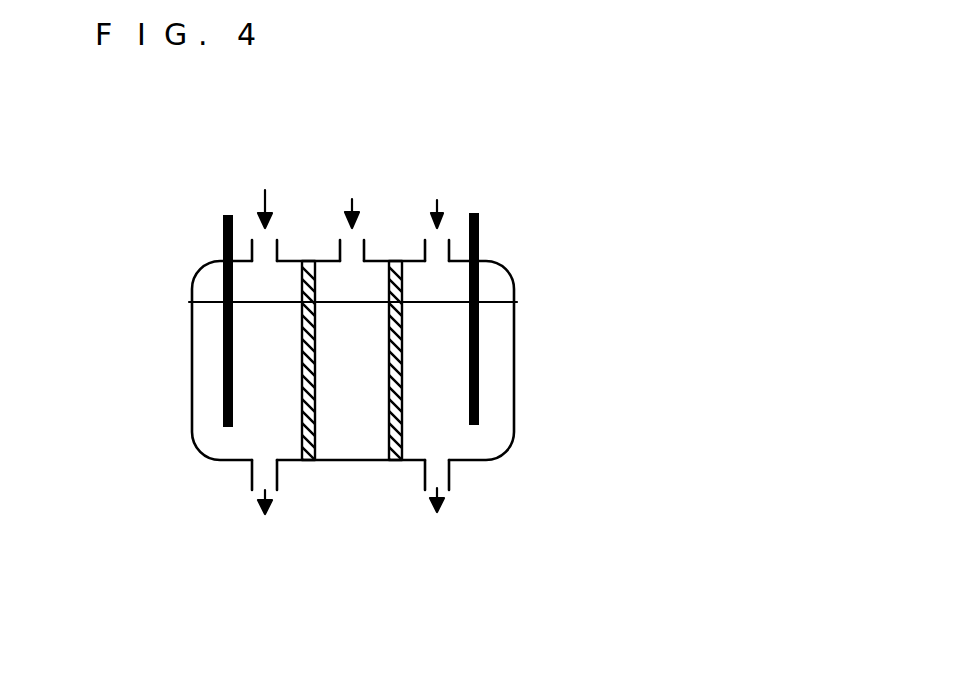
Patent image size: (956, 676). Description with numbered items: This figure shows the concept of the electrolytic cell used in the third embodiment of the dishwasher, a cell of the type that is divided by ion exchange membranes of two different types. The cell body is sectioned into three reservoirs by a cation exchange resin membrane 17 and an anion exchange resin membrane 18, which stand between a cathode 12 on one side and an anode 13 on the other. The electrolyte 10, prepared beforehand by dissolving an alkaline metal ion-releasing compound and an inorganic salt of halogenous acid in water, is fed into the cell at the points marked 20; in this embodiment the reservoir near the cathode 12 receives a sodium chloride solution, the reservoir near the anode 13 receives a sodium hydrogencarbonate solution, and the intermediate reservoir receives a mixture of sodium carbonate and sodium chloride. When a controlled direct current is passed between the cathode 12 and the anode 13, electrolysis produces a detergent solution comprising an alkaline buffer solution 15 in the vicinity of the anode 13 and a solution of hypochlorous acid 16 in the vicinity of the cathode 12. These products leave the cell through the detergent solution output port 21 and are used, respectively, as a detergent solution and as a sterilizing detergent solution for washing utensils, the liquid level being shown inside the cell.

The electrolyte 10 is at (437, 448).
The cathode 12 is at (222, 237).
The anode 13 is at (480, 261).
The alkaline buffer solution 15 is at (435, 515).
The solution of hypochlorous acid 16 is at (270, 517).
The cation exchange resin membrane 17 is at (402, 362).
The anion exchange resin membrane 18 is at (315, 443).
The inlet water supply 20 is at (265, 190).
The detergent solution output port 21 is at (428, 472).